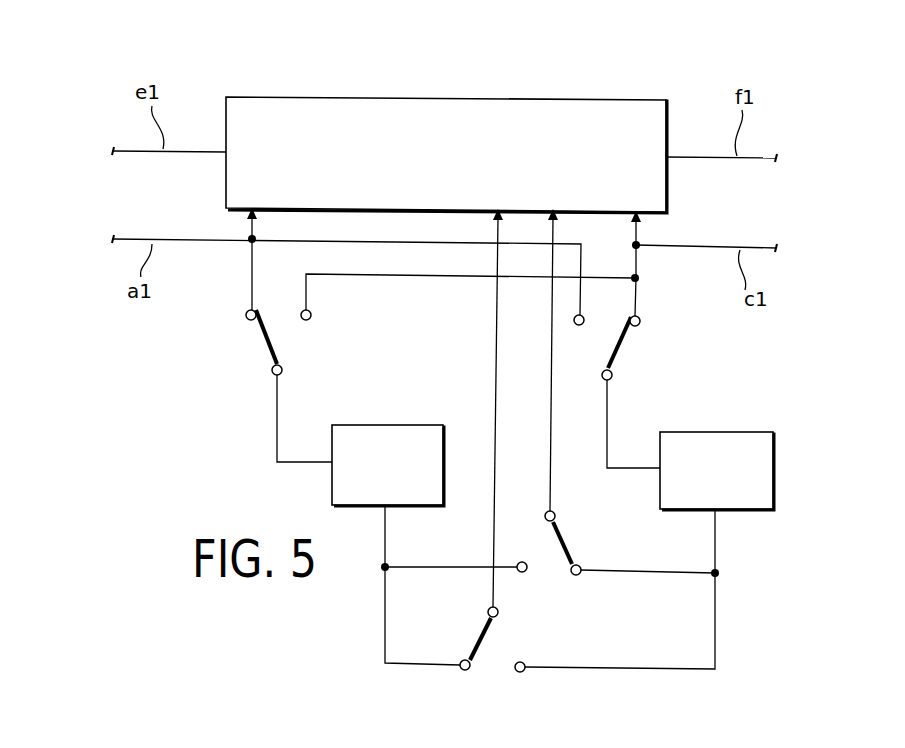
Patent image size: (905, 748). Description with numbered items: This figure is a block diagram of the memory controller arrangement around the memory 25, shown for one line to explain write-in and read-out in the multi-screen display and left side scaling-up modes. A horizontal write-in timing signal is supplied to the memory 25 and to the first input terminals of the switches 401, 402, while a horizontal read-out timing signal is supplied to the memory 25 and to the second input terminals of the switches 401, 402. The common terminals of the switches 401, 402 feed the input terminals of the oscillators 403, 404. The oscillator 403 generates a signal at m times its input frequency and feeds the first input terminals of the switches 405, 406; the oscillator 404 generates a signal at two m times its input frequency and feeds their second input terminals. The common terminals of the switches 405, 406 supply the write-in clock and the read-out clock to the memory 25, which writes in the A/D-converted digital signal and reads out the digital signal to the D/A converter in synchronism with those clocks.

The memory 25 is at (300, 97).
The switch 401 is at (260, 354).
The switch 402 is at (628, 348).
The oscillator 403 is at (410, 425).
The oscillator 404 is at (755, 432).
The switch 405 is at (505, 642).
The switch 406 is at (568, 538).